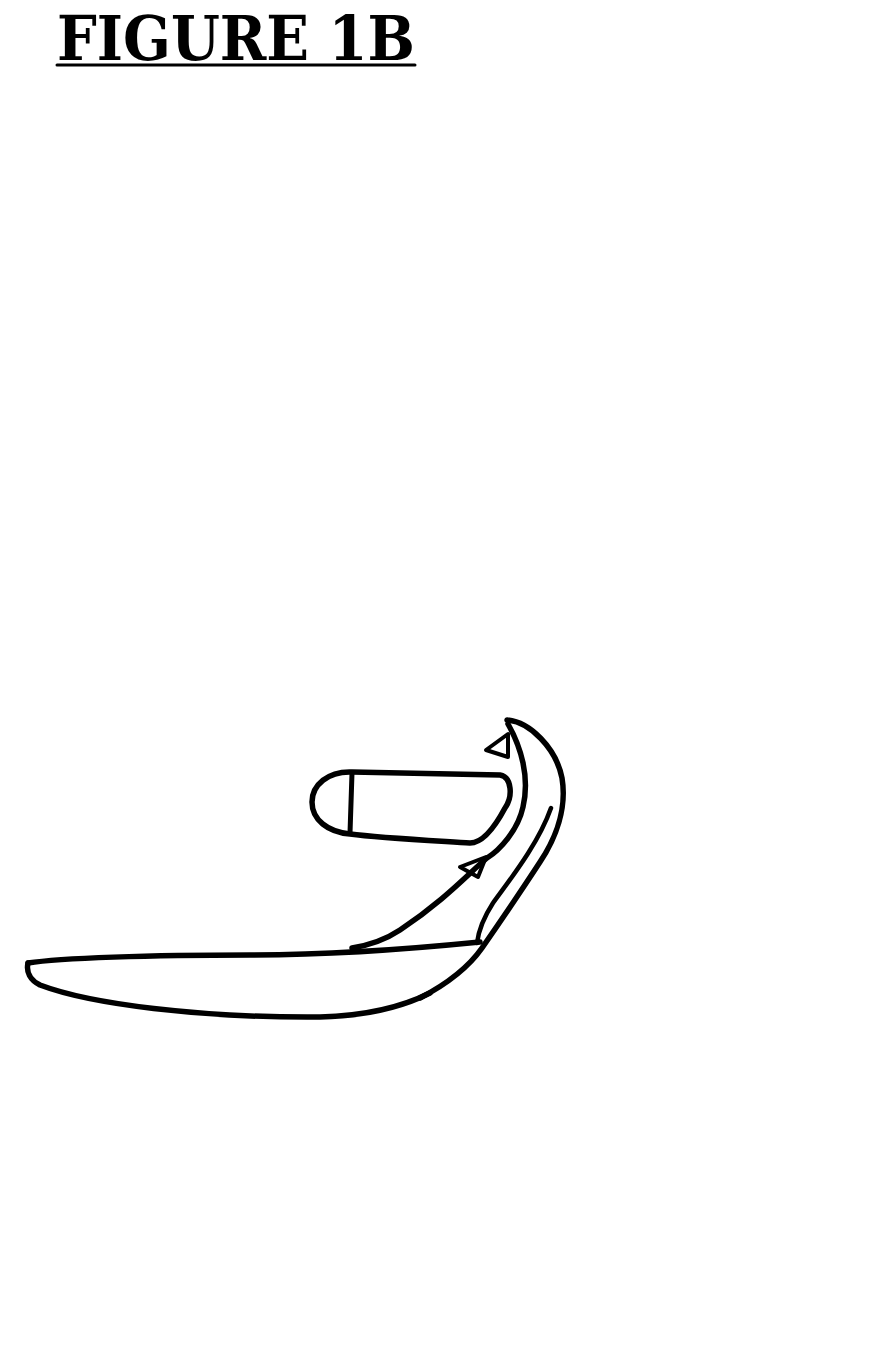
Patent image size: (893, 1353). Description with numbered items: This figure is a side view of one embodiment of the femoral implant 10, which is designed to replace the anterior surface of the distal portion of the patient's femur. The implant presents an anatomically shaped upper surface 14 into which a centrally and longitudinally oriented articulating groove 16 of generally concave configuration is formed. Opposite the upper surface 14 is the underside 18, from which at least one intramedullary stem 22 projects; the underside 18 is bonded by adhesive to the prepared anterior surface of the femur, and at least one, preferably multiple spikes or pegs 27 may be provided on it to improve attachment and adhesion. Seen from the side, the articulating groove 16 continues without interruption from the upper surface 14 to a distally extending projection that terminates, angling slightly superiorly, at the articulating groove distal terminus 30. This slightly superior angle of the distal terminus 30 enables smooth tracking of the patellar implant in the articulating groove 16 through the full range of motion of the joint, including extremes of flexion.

The femoral implant 10 is at (295, 623).
The upper surface 14 is at (267, 1023).
The articulating groove 16 is at (548, 740).
The underside 18 is at (200, 950).
The intramedullary stem 22 is at (448, 802).
The spikes or pegs 27 is at (486, 749).
The articulating groove distal terminus 30 is at (507, 720).